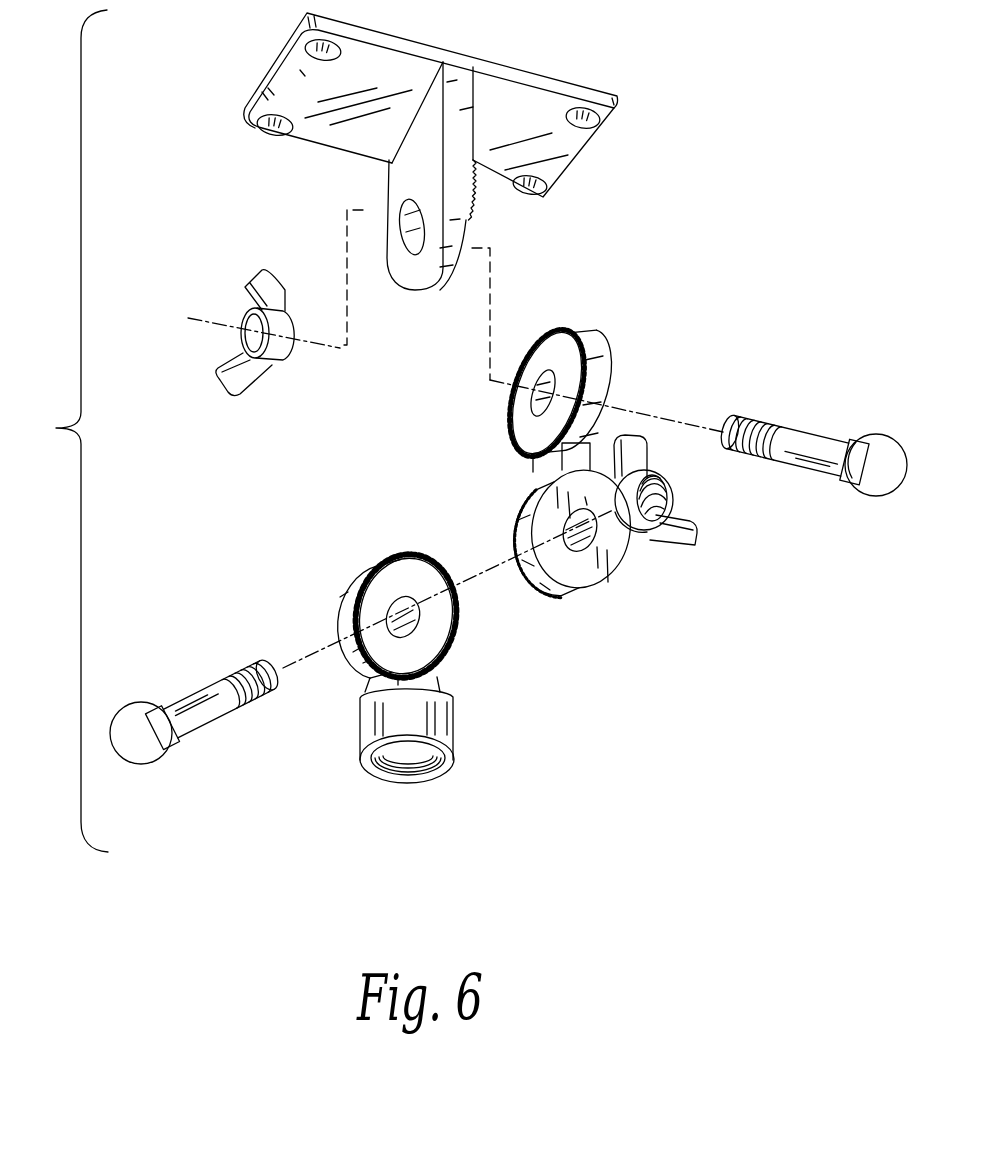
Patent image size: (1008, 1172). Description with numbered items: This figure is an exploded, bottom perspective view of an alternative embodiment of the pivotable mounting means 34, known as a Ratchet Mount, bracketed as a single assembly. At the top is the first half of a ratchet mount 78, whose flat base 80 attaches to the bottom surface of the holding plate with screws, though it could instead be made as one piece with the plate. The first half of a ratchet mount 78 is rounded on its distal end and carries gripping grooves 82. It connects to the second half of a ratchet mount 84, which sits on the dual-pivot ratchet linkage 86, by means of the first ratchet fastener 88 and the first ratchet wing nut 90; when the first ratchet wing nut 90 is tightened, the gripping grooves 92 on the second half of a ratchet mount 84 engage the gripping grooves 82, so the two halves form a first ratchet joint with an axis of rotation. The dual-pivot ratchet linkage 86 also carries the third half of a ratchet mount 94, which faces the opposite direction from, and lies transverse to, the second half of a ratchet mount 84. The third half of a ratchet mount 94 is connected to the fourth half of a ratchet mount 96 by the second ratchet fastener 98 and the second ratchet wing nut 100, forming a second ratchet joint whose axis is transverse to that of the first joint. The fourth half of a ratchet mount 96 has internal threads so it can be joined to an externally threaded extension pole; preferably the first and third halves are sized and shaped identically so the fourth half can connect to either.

The pivotable mounting means 34 is at (60, 431).
The first half of a ratchet mount 78 is at (387, 263).
The base 80 is at (332, 143).
The gripping grooves 82 is at (480, 217).
The second half of a ratchet mount 84 is at (608, 368).
The dual-pivot ratchet linkage 86 is at (518, 475).
The first ratchet fastener 88 is at (805, 432).
The first ratchet wing nut 90 is at (277, 357).
The gripping grooves 92 is at (503, 415).
The third half of a ratchet mount 94 is at (623, 557).
The fourth half of a ratchet mount 96 is at (340, 612).
The second ratchet fastener 98 is at (197, 690).
The second ratchet wing nut 100 is at (683, 555).